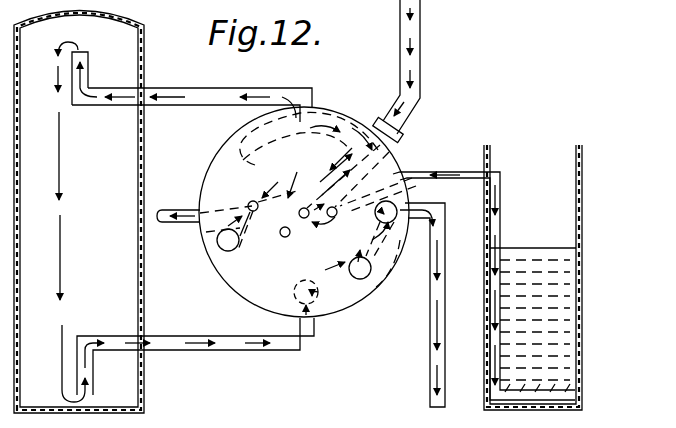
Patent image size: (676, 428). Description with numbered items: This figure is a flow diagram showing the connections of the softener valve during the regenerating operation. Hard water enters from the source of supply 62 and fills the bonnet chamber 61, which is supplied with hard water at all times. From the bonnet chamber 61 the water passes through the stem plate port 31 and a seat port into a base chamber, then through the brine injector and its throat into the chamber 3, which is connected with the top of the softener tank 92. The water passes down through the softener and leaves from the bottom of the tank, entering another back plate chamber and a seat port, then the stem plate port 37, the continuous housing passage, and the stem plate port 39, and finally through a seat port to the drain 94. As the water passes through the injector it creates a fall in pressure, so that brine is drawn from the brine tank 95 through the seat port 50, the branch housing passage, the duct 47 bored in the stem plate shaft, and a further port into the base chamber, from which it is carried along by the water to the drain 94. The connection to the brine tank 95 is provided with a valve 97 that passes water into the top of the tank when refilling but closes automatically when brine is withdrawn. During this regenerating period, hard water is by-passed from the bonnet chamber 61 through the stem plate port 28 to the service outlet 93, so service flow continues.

The chamber 3 is at (318, 122).
The stem plate port 28 is at (254, 201).
The stem plate port 31 is at (283, 238).
The port 37 is at (366, 278).
The port 39 is at (395, 206).
The duct 47 is at (306, 219).
The port 50 is at (337, 215).
The bonnet chamber 61 is at (308, 213).
The source of supply 62 is at (422, 48).
The tank 92 is at (164, 212).
The service outlet 93 is at (186, 224).
The drain 94 is at (442, 336).
The brine tank 95 is at (580, 298).
The valve 97 is at (501, 172).